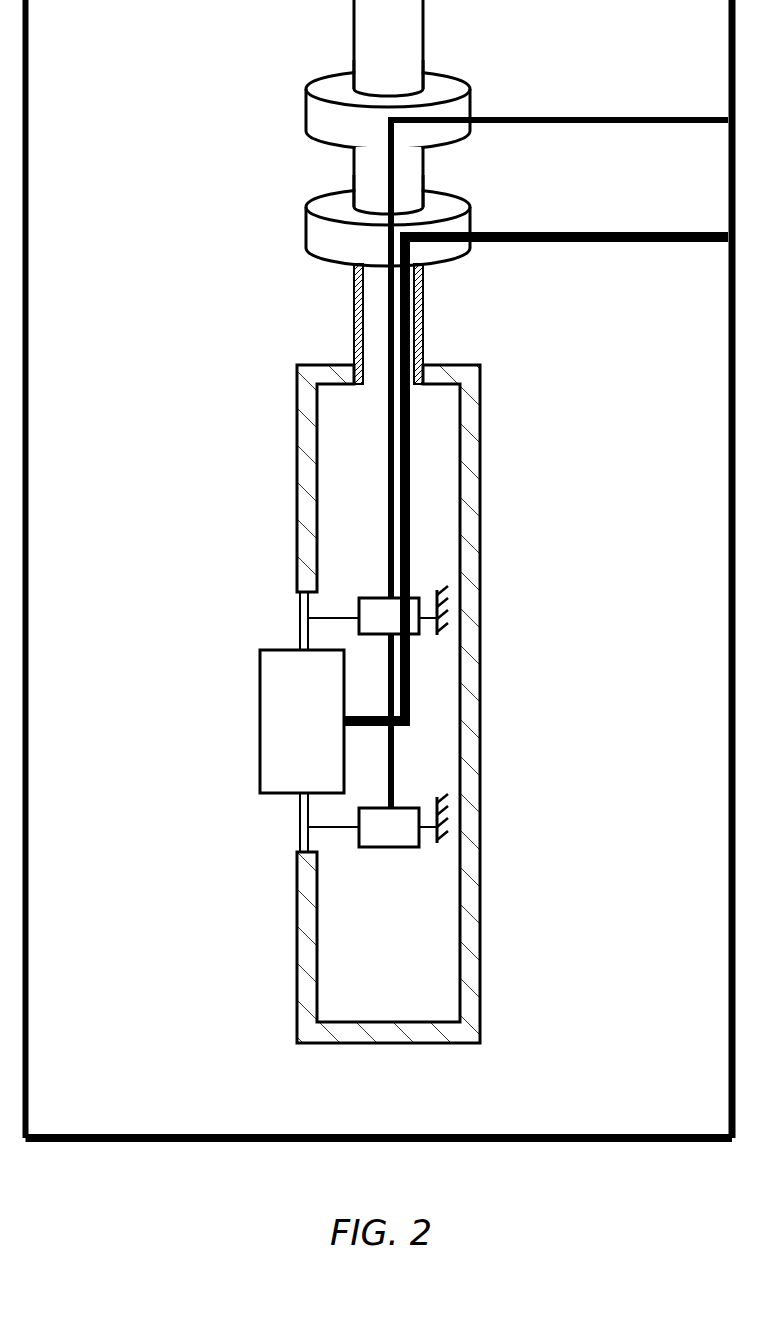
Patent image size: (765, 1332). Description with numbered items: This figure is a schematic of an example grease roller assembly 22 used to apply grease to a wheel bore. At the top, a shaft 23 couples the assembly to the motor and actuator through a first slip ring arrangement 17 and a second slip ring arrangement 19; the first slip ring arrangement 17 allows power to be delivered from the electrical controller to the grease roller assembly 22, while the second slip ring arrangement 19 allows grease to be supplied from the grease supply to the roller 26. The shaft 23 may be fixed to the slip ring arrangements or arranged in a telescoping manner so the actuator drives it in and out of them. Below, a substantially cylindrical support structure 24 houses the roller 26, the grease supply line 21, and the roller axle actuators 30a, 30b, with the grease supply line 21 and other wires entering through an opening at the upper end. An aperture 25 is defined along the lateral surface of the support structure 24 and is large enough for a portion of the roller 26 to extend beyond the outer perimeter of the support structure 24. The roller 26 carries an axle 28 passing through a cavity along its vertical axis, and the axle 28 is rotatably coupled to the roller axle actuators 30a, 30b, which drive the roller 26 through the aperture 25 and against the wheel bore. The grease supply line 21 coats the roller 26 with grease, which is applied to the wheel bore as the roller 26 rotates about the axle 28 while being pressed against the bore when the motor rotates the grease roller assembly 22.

The first slip ring arrangement 17 is at (442, 90).
The second slip ring arrangement 19 is at (442, 205).
The grease supply line 21 is at (588, 233).
The grease roller assembly 22 is at (310, 654).
The shaft 23 is at (352, 323).
The support structure 24 is at (297, 1012).
The aperture 25 is at (287, 852).
The roller 26 is at (268, 797).
The axle 28 is at (300, 628).
The roller axle actuator 30a is at (372, 597).
The roller axle actuator 30b is at (393, 848).